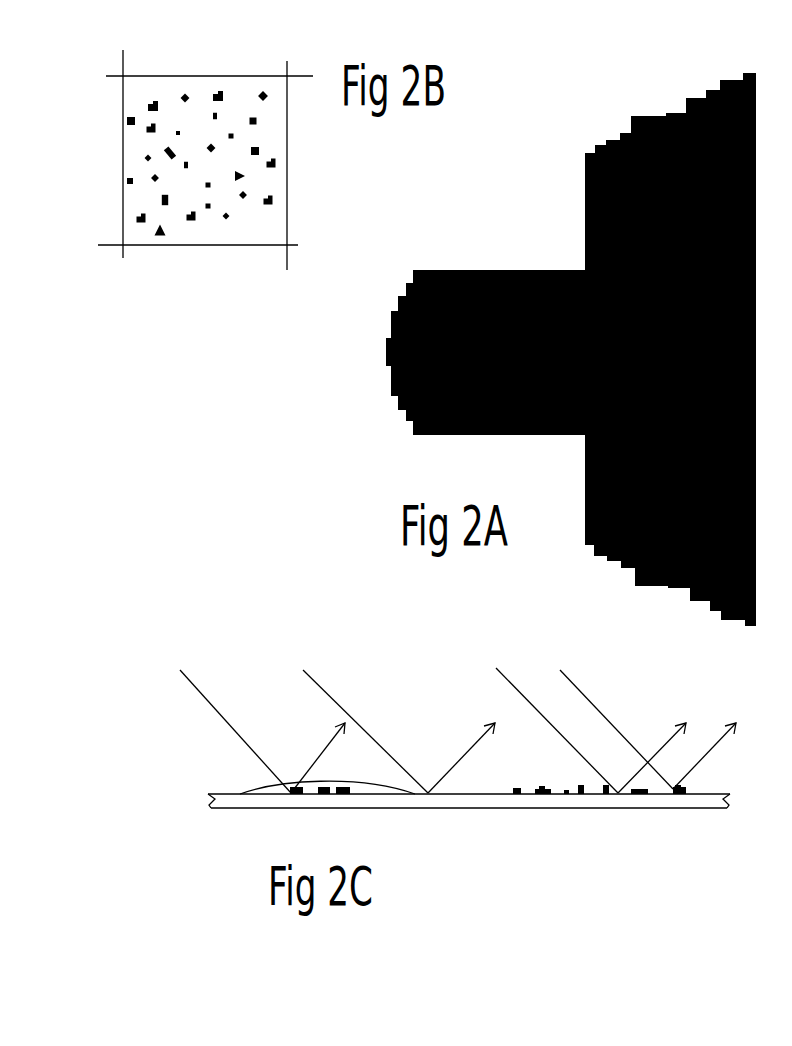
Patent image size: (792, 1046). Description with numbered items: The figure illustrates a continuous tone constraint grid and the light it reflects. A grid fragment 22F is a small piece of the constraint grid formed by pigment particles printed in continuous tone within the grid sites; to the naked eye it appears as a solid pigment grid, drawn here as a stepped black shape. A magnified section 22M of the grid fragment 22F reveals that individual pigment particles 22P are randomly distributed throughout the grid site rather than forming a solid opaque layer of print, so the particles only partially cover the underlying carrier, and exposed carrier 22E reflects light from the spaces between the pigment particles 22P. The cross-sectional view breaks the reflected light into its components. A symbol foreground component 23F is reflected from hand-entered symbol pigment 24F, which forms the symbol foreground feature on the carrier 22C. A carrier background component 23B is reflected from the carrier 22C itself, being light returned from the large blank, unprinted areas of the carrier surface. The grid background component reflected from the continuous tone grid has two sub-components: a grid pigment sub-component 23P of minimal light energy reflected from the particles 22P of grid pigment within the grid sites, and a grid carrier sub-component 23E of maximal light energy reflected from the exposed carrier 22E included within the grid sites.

In FIG. 2B, the section 22M is at (218, 270).
In FIG. 2B, the pigment particles 22P is at (252, 143).
In FIG. 2C, the pigment particles 22P is at (571, 778).
In FIG. 2B, the exposed carrier 22E is at (263, 216).
In FIG. 2C, the exposed carrier 22E is at (557, 782).
In FIG. 2A, the grid fragment 22F is at (548, 462).
In FIG. 2C, the carrier 22C is at (284, 794).
In FIG. 2C, the symbol pigment 24F is at (255, 775).
In FIG. 2C, the symbol foreground component 23F is at (325, 728).
In FIG. 2C, the carrier background component 23B is at (482, 728).
In FIG. 2C, the grid carrier sub-component 23E is at (668, 728).
In FIG. 2C, the grid pigment sub-component 23P is at (715, 727).